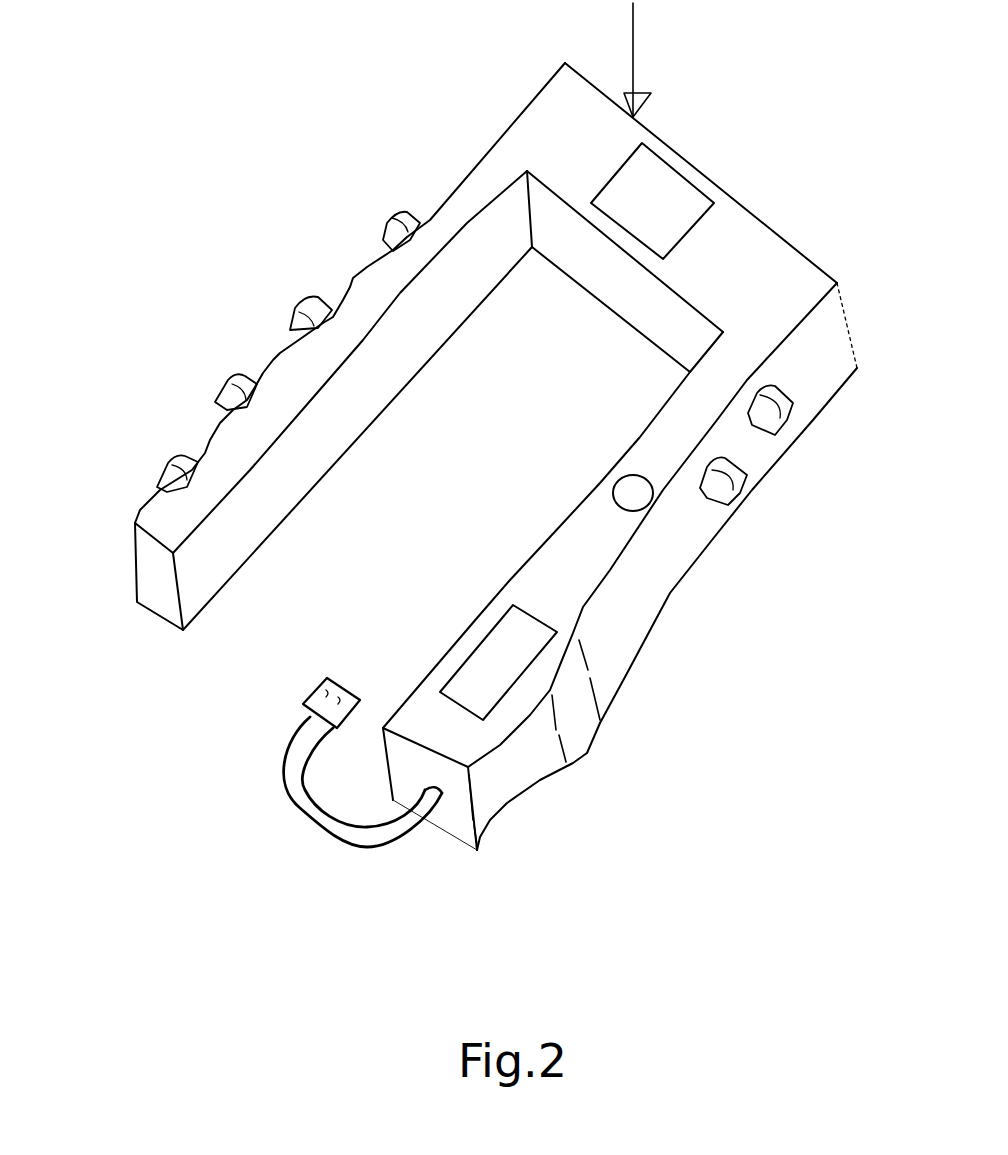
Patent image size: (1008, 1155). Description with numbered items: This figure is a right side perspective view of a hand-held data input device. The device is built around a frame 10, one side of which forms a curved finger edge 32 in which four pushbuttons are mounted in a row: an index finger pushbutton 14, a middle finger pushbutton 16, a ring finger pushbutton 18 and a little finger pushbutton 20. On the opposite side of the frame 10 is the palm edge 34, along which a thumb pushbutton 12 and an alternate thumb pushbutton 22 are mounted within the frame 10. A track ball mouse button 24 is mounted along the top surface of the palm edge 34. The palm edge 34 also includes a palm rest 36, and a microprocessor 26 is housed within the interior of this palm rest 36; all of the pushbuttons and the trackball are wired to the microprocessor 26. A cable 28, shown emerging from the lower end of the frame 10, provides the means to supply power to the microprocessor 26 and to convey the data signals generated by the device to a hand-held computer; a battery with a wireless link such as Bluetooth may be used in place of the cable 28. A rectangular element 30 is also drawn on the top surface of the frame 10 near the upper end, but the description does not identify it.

The frame 10 is at (565, 125).
The thumb pushbutton 12 is at (748, 493).
The index finger pushbutton 14 is at (383, 227).
The middle finger pushbutton 16 is at (297, 318).
The ring finger pushbutton 18 is at (240, 388).
The little finger pushbutton 20 is at (180, 468).
The alternate thumb pushbutton 22 is at (768, 410).
The track ball mouse button 24 is at (628, 495).
The microprocessor 26 is at (498, 680).
The cable 28 is at (320, 822).
The rectangular recess 30 is at (670, 203).
The curved finger edge 32 is at (283, 353).
The palm edge 34 is at (630, 608).
The palm rest 36 is at (573, 717).